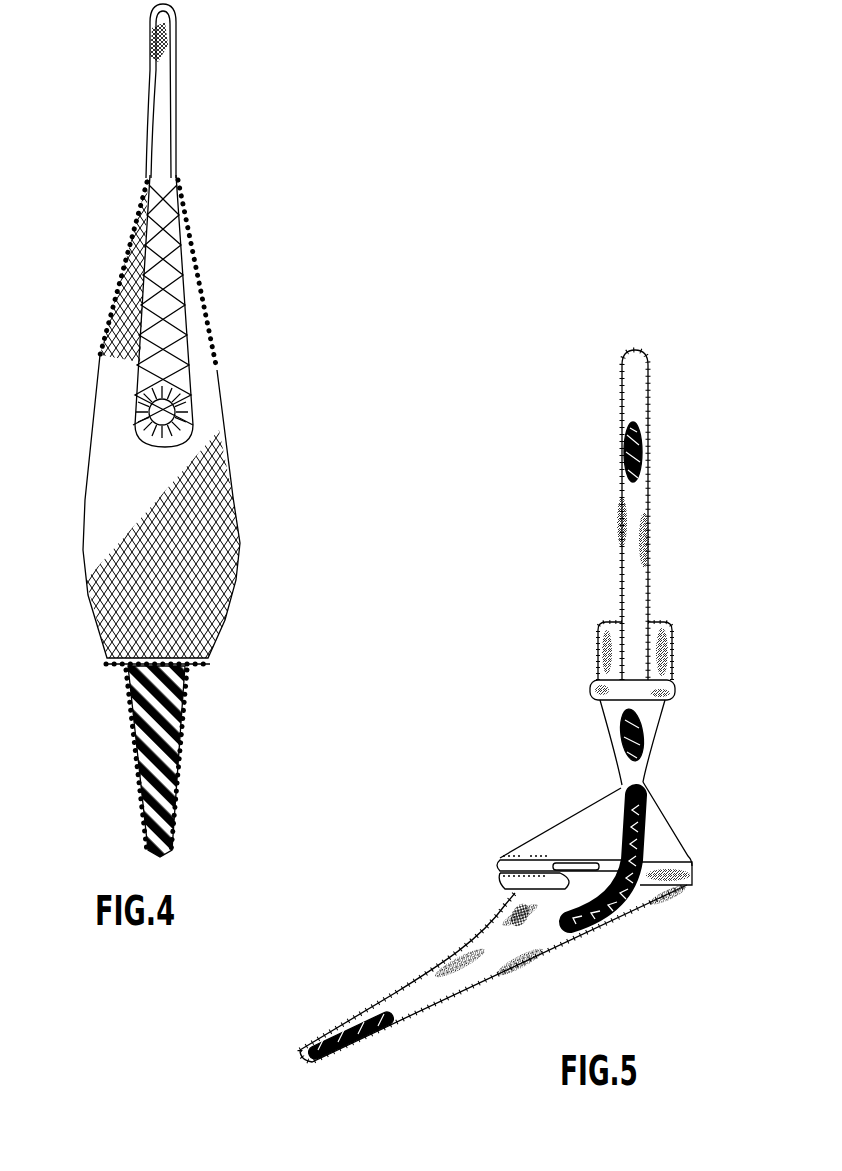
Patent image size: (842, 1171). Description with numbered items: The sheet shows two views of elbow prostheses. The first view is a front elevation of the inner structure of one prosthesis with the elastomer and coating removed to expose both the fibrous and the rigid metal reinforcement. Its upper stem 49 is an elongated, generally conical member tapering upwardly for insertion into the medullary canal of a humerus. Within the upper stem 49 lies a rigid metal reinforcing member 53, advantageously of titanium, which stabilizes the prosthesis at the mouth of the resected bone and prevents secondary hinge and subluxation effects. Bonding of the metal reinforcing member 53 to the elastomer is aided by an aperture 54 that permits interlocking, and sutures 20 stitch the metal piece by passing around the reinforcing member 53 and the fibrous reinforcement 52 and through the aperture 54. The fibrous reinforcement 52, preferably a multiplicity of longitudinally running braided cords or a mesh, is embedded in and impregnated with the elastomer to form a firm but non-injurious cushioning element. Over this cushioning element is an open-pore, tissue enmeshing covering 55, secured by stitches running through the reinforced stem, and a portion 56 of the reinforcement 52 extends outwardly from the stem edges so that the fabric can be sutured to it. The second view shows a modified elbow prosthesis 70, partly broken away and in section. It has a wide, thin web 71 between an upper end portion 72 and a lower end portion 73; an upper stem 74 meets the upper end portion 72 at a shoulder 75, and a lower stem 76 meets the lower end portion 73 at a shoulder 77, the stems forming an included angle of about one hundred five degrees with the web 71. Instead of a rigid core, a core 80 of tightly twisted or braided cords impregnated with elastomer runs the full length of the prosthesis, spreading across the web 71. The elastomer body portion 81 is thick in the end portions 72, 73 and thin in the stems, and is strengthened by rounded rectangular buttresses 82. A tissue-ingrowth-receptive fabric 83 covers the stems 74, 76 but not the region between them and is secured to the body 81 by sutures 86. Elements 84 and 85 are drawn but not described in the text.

In FIG. 4, the sutures 20 is at (148, 327).
In FIG. 4, the upper stem 49 is at (167, 112).
In FIG. 4, the fibrous reinforcement 52 is at (225, 517).
In FIG. 4, the metal reinforcing member 53 is at (175, 381).
In FIG. 4, the aperture 54 is at (170, 413).
In FIG. 4, the tissue enmeshing covering 55 is at (183, 217).
In FIG. 4, the portion of the reinforcement 56 is at (174, 66).
In FIG. 5, the elbow prosthesis 70 is at (538, 403).
In FIG. 5, the web 71 is at (640, 773).
In FIG. 5, the upper end portion 72 is at (608, 712).
In FIG. 5, the lower end portion 73 is at (547, 828).
In FIG. 5, the upper stem 74 is at (640, 357).
In FIG. 5, the shoulder 75 is at (590, 690).
In FIG. 5, the lower stem 76 is at (440, 1000).
In FIG. 5, the shoulder 77 is at (693, 868).
In FIG. 5, the core 80 is at (626, 452).
In FIG. 5, the body portion 81 is at (640, 440).
In FIG. 5, the buttresses 82 is at (604, 622).
In FIG. 5, the tissue-ingrowth-receptive fabric 83 is at (640, 540).
In FIG. 5, the bar 84 is at (500, 866).
In FIG. 5, the pin 85 is at (573, 848).
In FIG. 5, the sutures 86 is at (637, 550).